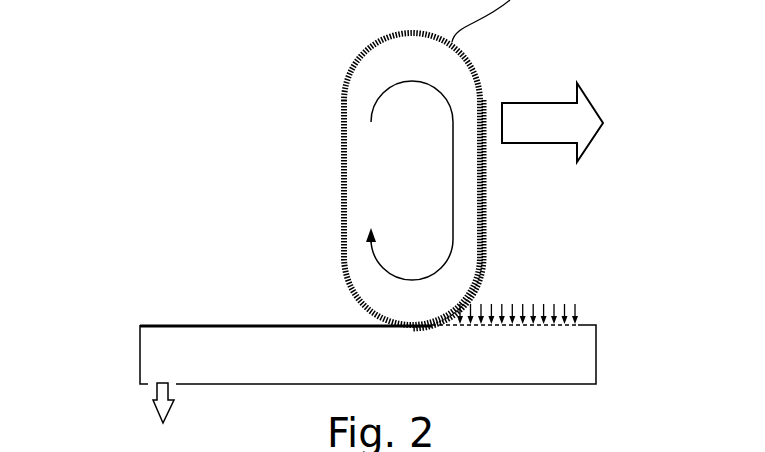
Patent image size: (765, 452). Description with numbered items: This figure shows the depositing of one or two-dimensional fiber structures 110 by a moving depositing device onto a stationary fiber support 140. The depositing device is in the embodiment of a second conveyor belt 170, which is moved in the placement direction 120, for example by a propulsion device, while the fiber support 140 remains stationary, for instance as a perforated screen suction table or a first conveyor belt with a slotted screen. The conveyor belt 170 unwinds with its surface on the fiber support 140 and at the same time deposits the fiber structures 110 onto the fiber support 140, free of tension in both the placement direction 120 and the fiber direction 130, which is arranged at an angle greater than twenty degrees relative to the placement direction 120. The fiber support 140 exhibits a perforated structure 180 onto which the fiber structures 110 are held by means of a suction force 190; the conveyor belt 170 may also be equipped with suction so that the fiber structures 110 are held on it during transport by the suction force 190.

The 1 or 2-dimensional fiber structures 110 is at (485, 250).
The placement direction 120 is at (522, 103).
The fiber direction 130 is at (373, 21).
The fiber support 140 is at (140, 343).
The second conveyor belt 170 is at (343, 162).
The perforated structure 180 is at (492, 327).
The suction force 190 is at (577, 308).